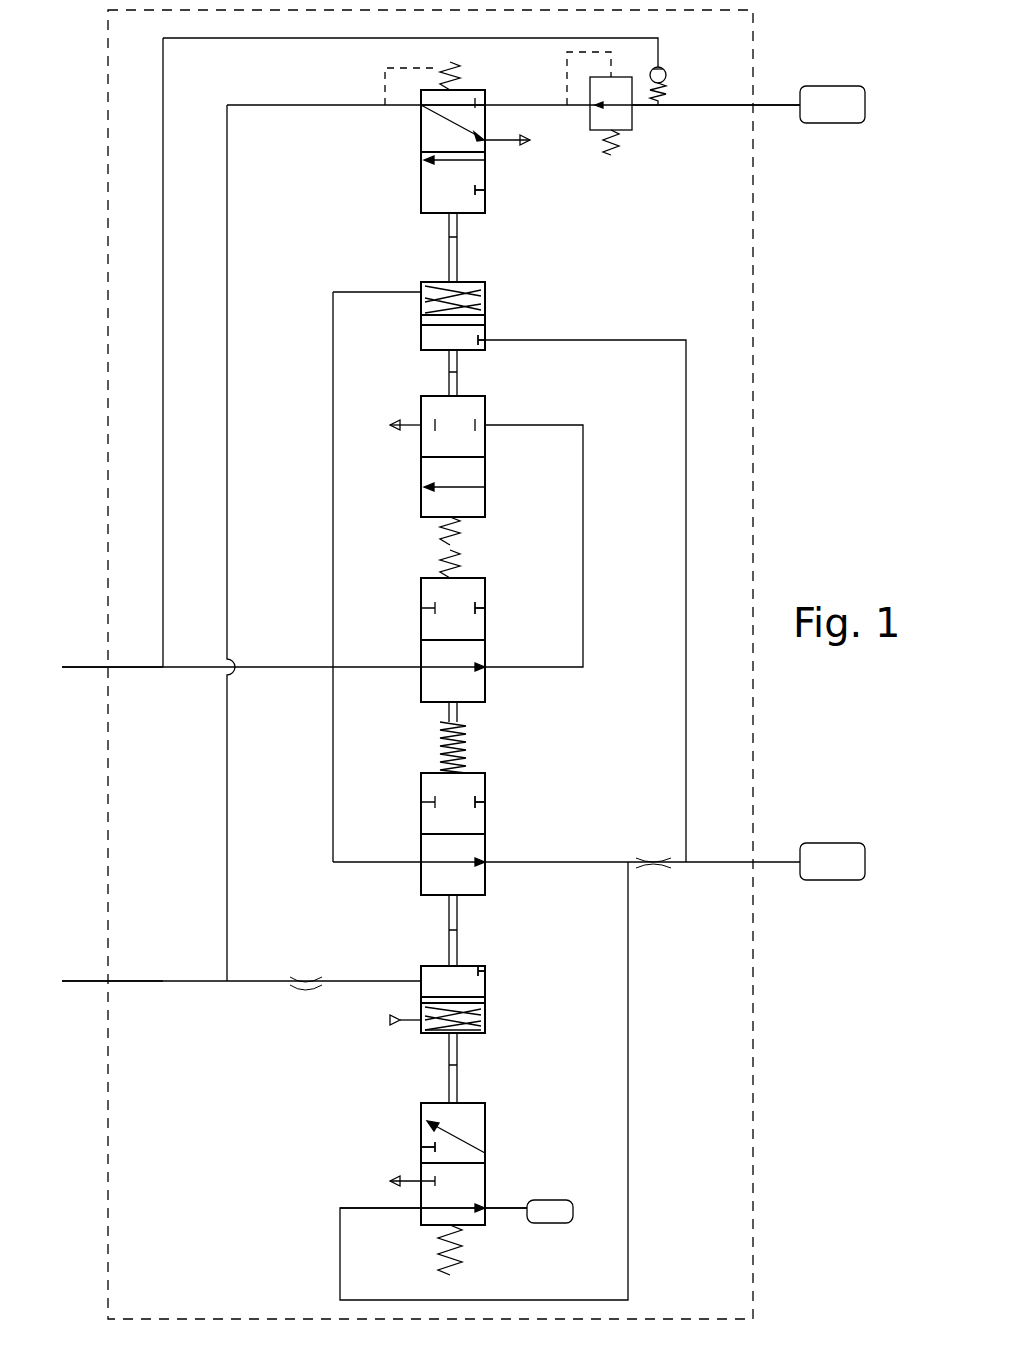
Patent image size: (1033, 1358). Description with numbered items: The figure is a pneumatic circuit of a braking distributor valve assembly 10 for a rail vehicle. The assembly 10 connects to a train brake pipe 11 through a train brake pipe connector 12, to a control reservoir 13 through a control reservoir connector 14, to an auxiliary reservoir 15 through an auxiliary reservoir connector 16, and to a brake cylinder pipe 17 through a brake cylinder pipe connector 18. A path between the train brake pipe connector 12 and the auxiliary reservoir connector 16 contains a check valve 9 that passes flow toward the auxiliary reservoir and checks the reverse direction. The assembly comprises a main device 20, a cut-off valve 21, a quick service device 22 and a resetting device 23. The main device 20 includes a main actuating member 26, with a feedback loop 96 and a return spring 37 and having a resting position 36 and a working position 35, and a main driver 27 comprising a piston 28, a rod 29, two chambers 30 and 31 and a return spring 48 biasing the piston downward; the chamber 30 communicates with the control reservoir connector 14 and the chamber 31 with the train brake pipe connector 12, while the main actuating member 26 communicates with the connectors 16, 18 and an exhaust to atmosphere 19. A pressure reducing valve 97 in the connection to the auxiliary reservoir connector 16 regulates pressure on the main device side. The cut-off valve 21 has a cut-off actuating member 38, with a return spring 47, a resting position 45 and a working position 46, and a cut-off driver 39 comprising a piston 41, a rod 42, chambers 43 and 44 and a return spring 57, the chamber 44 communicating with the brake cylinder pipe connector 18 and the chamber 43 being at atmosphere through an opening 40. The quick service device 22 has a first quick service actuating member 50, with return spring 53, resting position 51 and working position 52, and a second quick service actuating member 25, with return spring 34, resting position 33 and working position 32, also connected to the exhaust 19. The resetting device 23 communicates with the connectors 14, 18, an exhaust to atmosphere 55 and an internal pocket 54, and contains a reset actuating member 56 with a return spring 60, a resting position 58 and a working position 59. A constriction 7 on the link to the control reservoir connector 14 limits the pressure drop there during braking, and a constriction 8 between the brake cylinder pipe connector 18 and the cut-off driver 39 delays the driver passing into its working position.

The constriction 7 is at (650, 858).
The constriction 8 is at (303, 972).
The check valve 9 is at (668, 68).
The distributor valve assembly 10 is at (753, 400).
The train brake pipe 11 is at (85, 670).
The train brake pipe connector 12 is at (110, 665).
The control reservoir 13 is at (832, 880).
The control reservoir connector 14 is at (753, 862).
The auxiliary reservoir 15 is at (832, 123).
The auxiliary reservoir connector 16 is at (753, 105).
The brake cylinder pipe 17 is at (85, 984).
The brake cylinder pipe connector 18 is at (110, 979).
The exhaust to atmosphere 19 is at (485, 140).
The main device 20 is at (527, 236).
The cut-off valve 21 is at (497, 932).
The quick service device 22 is at (532, 563).
The resetting device 23 is at (575, 1155).
The second quick service actuating member 25 is at (418, 457).
The main actuating member 26 is at (404, 160).
The main driver 27 is at (418, 318).
The piston 28 is at (485, 312).
The rod 29 is at (458, 245).
The chamber 30 is at (485, 336).
The chamber 31 is at (485, 286).
The working position 32 is at (485, 472).
The resting position 33 is at (485, 408).
The return spring 34 is at (462, 540).
The working position 35 is at (485, 186).
The resting position 36 is at (421, 122).
The return spring 37 is at (462, 70).
The cut-off actuating member 38 is at (418, 834).
The cut-off driver 39 is at (406, 976).
The opening to atmosphere 40 is at (421, 1025).
The piston 41 is at (485, 1000).
The rod 42 is at (447, 958).
The chamber 43 is at (485, 1018).
The chamber 44 is at (478, 970).
The resting position 45 is at (485, 846).
The working position 46 is at (485, 790).
The return spring 47 is at (446, 742).
The return spring 48 is at (437, 292).
The first quick service actuating member 50 is at (418, 640).
The resting position 51 is at (485, 650).
The working position 52 is at (485, 596).
The return spring 53 is at (462, 570).
The pocket 54 is at (555, 1223).
The exhaust to atmosphere 55 is at (421, 1178).
The reset actuating member 56 is at (497, 1174).
The return spring 57 is at (476, 1033).
The resting position 58 is at (485, 1190).
The working position 59 is at (485, 1118).
The return spring 60 is at (465, 1262).
The feedback loop 96 is at (385, 75).
The pressure reducing valve 97 is at (640, 127).